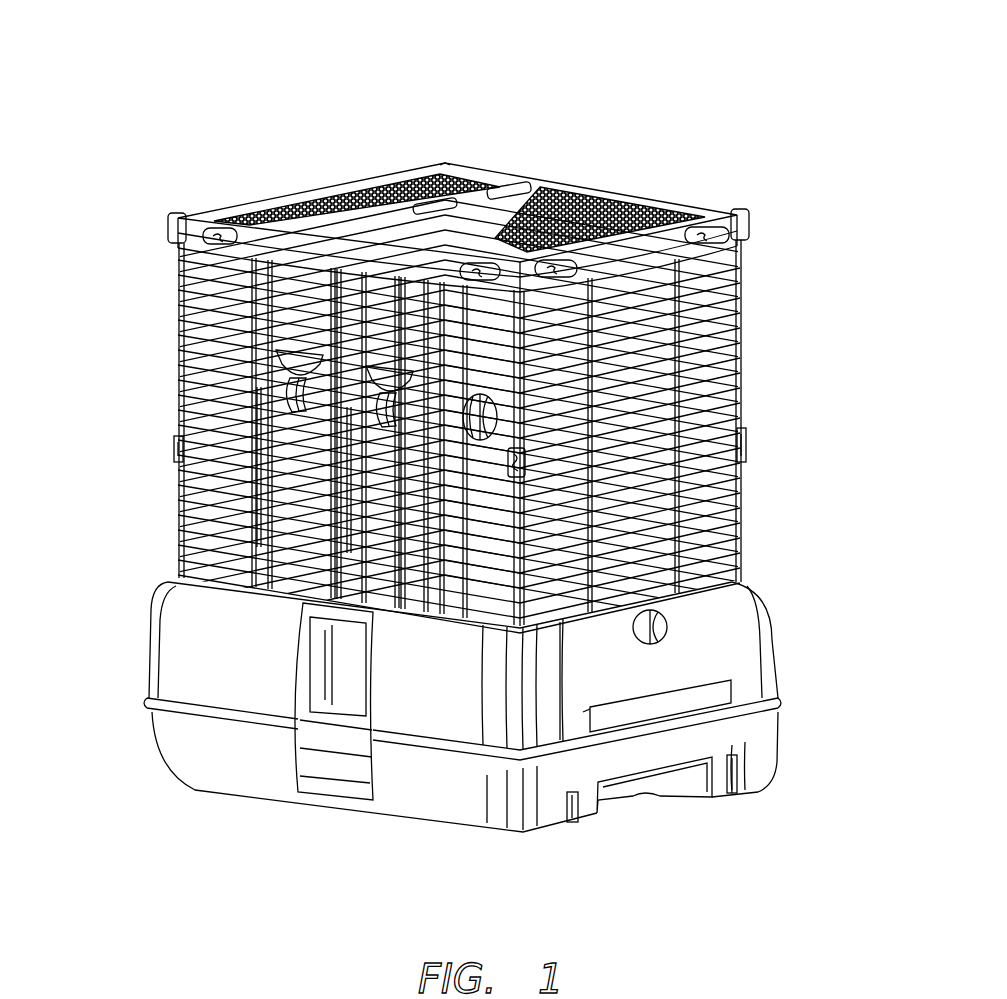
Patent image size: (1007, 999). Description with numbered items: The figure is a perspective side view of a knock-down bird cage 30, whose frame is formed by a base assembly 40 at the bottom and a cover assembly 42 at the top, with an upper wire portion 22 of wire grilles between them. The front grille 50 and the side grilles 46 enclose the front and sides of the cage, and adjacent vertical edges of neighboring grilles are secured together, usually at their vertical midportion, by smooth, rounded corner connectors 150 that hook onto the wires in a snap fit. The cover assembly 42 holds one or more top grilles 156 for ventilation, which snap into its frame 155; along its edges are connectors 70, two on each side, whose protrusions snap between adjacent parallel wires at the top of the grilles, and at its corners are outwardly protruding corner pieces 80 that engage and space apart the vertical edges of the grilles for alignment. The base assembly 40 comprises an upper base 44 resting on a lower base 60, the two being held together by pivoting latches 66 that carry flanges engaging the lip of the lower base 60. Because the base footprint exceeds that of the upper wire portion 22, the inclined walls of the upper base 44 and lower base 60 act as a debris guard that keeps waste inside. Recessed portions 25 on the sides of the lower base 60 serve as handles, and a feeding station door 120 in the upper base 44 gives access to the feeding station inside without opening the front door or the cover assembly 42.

The knock-down bird cage 30 is at (197, 58).
The upper wire portion 22 is at (750, 290).
The cover assembly 42 is at (507, 168).
The top grilles 156 is at (393, 168).
The frame 155 is at (522, 178).
The connectors 70 is at (478, 268).
The corner pieces 80 is at (752, 222).
The front grille 50 is at (195, 390).
The side grilles 46 is at (737, 395).
The corner connectors 150 is at (176, 448).
The base assembly 40 is at (740, 796).
The upper base 44 is at (160, 612).
The feeding station door 120 is at (705, 623).
The pivoting latches 66 is at (340, 790).
The lower base 60 is at (522, 832).
The recessed portions 25 is at (640, 797).